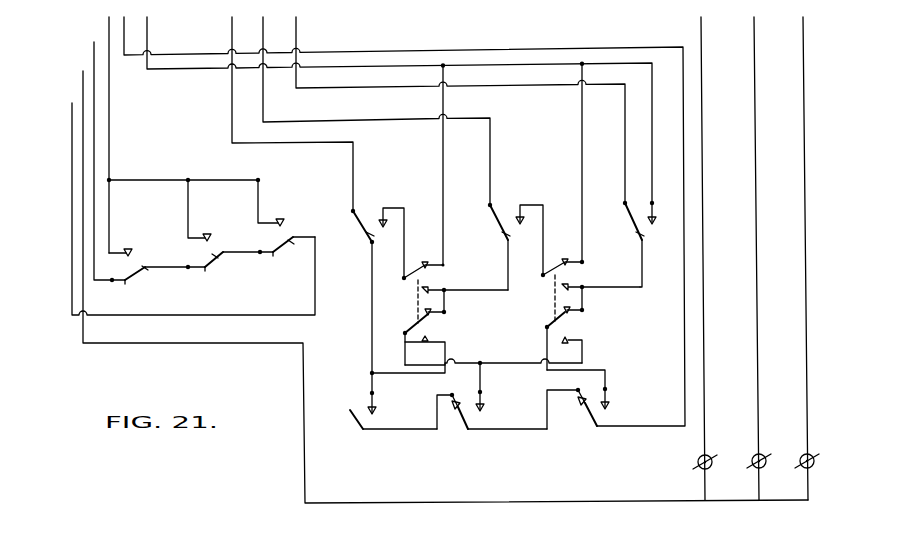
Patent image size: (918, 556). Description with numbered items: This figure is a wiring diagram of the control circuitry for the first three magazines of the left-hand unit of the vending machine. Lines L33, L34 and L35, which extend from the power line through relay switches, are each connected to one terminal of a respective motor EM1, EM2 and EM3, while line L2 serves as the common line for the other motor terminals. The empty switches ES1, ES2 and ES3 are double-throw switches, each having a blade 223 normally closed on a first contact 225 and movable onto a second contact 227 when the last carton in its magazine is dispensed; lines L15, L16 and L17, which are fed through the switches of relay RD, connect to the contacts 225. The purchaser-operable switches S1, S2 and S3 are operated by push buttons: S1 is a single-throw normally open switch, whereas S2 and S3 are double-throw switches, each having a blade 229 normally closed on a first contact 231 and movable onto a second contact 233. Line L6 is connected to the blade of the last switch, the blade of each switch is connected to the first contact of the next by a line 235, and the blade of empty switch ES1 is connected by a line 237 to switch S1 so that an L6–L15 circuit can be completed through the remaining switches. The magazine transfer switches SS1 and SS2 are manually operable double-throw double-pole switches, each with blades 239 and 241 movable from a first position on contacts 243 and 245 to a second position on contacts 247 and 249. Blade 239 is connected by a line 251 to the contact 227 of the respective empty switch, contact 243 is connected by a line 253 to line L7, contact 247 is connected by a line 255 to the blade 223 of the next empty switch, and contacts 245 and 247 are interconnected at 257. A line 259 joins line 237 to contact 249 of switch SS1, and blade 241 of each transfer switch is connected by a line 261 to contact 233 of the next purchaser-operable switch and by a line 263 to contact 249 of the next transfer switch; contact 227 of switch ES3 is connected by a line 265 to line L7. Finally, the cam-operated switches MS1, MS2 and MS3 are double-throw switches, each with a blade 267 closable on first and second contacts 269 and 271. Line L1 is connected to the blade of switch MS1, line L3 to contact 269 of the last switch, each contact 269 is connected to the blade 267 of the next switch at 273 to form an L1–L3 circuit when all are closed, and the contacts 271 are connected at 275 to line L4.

The line L1 is at (71, 125).
The line L2 is at (82, 89).
The line L3 is at (93, 56).
The line L4 is at (112, 155).
The line L6 is at (193, 55).
The line L7 is at (170, 70).
The line L15 is at (232, 104).
The line L16 is at (263, 104).
The line L17 is at (296, 36).
The line L33 is at (704, 245).
The line L34 is at (757, 302).
The line L35 is at (806, 327).
The blade 223 is at (366, 236).
The first contact 225 is at (356, 215).
The second contact 227 is at (383, 229).
The blade 229 is at (351, 413).
The first contact 231 is at (452, 405).
The second contact 233 is at (369, 409).
The line 235 is at (384, 430).
The line 237 is at (371, 328).
The blade 239 is at (411, 277).
The blade 241 is at (422, 325).
The contact 243 is at (425, 262).
The contact 245 is at (433, 317).
The contact 247 is at (430, 288).
The contact 249 is at (596, 345).
The line 251 is at (395, 207).
The line 253 is at (443, 101).
The line 255 is at (507, 257).
The interconnection 257 is at (445, 303).
The line 259 is at (393, 373).
The line 261 is at (406, 353).
The line 263 is at (518, 355).
The line 265 is at (652, 68).
The blade 267 is at (143, 262).
The first contact 269 is at (125, 283).
The second contact 271 is at (128, 248).
The connection 273 is at (188, 266).
The connection 275 is at (110, 201).
The empty switch ES1 is at (362, 222).
The empty switch ES2 is at (503, 215).
The empty switch ES3 is at (632, 233).
The cam-operated switch MS1 is at (282, 248).
The cam-operated switch MS2 is at (213, 262).
The cam-operated switch MS3 is at (133, 274).
The magazine transfer switch SS1 is at (416, 312).
The magazine transfer switch SS2 is at (553, 302).
The purchaser-operable switch S1 is at (372, 422).
The purchaser-operable switch S2 is at (476, 420).
The purchaser-operable switch S3 is at (612, 416).
The motor EM1 is at (698, 464).
The motor EM2 is at (755, 455).
The motor EM3 is at (803, 455).
The relay RD is at (338, 549).